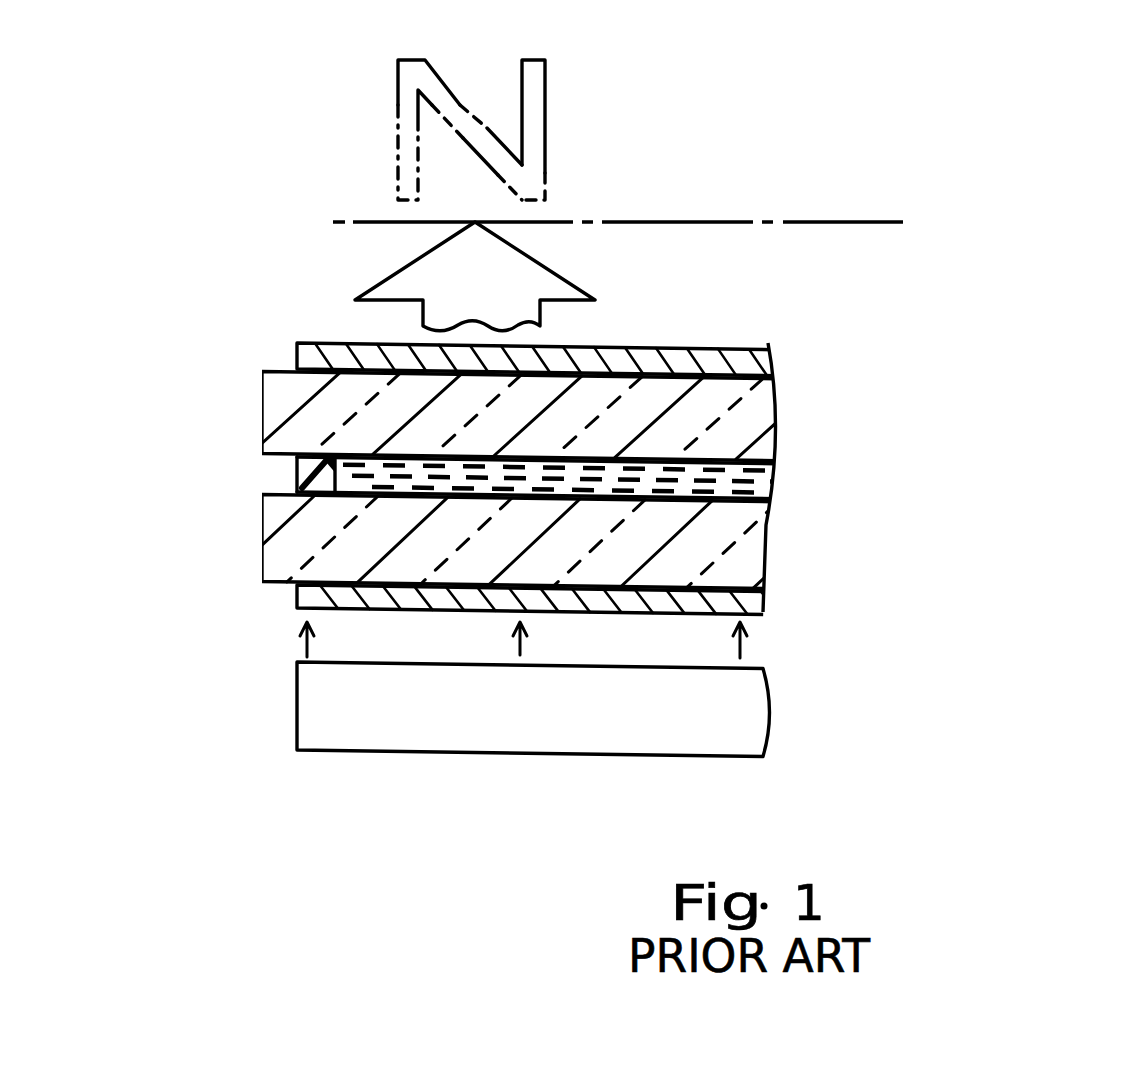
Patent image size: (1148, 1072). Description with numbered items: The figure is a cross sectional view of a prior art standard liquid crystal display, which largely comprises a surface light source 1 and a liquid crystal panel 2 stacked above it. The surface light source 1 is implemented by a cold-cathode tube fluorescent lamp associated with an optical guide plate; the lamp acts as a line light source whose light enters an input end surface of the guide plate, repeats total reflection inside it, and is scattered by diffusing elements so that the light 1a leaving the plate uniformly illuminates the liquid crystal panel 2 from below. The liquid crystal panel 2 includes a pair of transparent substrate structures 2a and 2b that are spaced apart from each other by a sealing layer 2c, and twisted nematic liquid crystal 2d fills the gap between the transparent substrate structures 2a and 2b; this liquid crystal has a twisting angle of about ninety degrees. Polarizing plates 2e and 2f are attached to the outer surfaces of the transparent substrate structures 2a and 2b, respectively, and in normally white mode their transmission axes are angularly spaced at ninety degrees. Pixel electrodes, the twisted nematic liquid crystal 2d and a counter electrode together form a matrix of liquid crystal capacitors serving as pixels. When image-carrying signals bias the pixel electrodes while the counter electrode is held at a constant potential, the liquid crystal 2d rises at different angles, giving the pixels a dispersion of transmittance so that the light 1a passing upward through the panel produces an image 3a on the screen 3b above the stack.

The surface light source 1 is at (297, 712).
The light 1a is at (518, 643).
The liquid crystal panel 2 is at (474, 449).
The transparent substrate structure 2a is at (262, 560).
The transparent substrate structure 2b is at (275, 411).
The sealing layer 2c is at (300, 472).
The twisted nematic liquid crystal 2d is at (768, 474).
The polarizing plate 2e is at (298, 596).
The polarizing plate 2f is at (298, 350).
The image 3a is at (547, 88).
The screen 3b is at (713, 178).